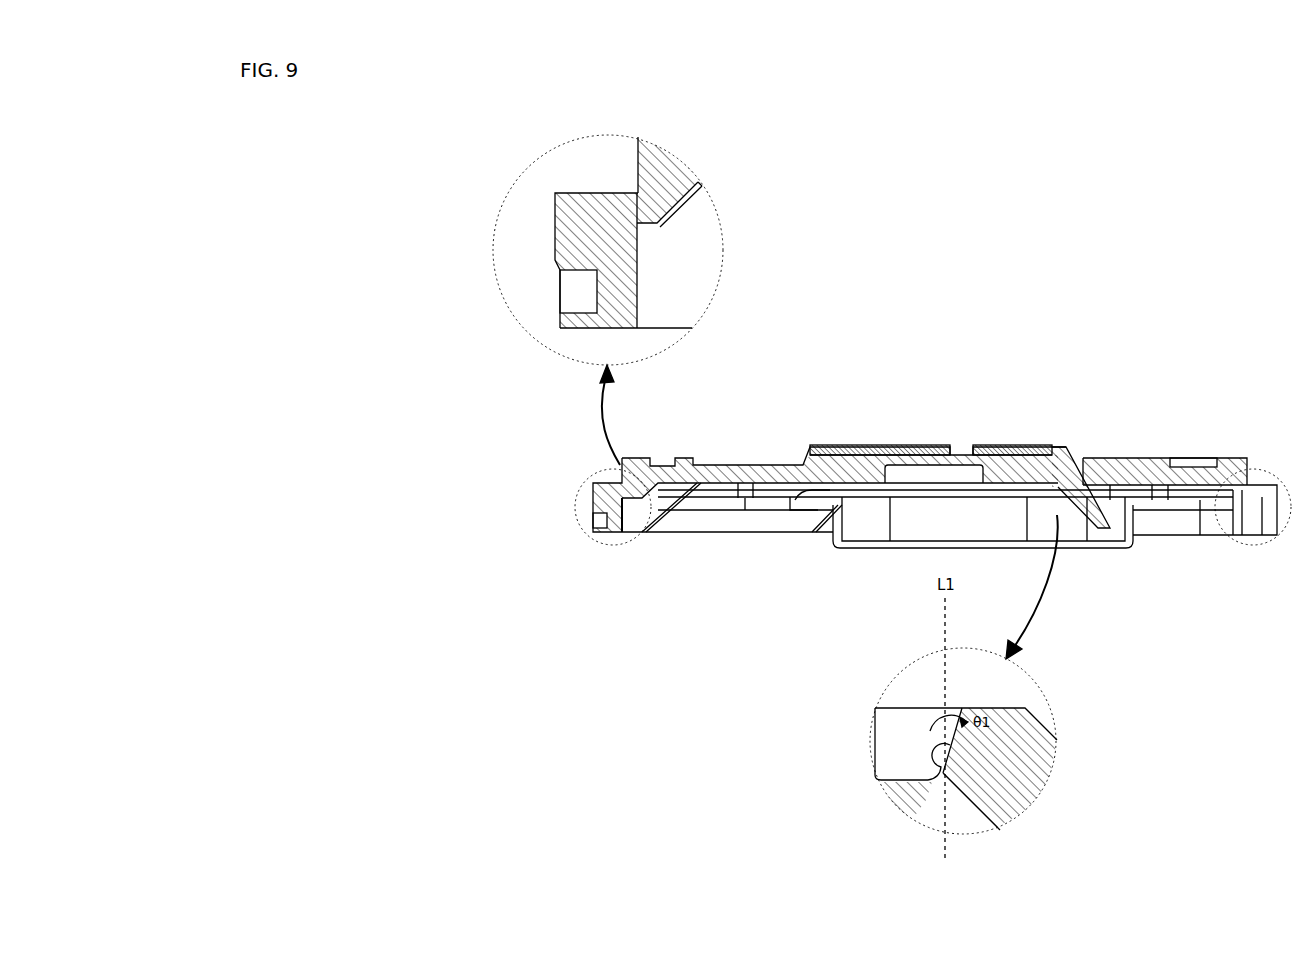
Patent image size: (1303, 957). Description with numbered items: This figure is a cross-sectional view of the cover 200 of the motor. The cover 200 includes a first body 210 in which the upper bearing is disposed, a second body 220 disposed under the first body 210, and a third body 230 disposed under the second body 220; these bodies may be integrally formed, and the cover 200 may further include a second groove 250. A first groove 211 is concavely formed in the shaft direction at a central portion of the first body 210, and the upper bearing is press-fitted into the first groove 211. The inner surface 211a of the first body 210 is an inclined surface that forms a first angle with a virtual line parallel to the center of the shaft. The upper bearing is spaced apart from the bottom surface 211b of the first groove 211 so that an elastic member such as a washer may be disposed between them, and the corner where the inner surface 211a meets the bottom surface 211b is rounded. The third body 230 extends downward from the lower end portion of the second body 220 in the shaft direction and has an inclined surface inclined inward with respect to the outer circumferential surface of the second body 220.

The cover 200 is at (426, 149).
The first body 210 is at (673, 153).
The first groove 211 is at (1028, 452).
The inner surface 211a is at (950, 781).
The bottom surface 211b is at (940, 770).
The second body 220 is at (567, 223).
The third body 230 is at (623, 303).
The second groove 250 is at (575, 295).